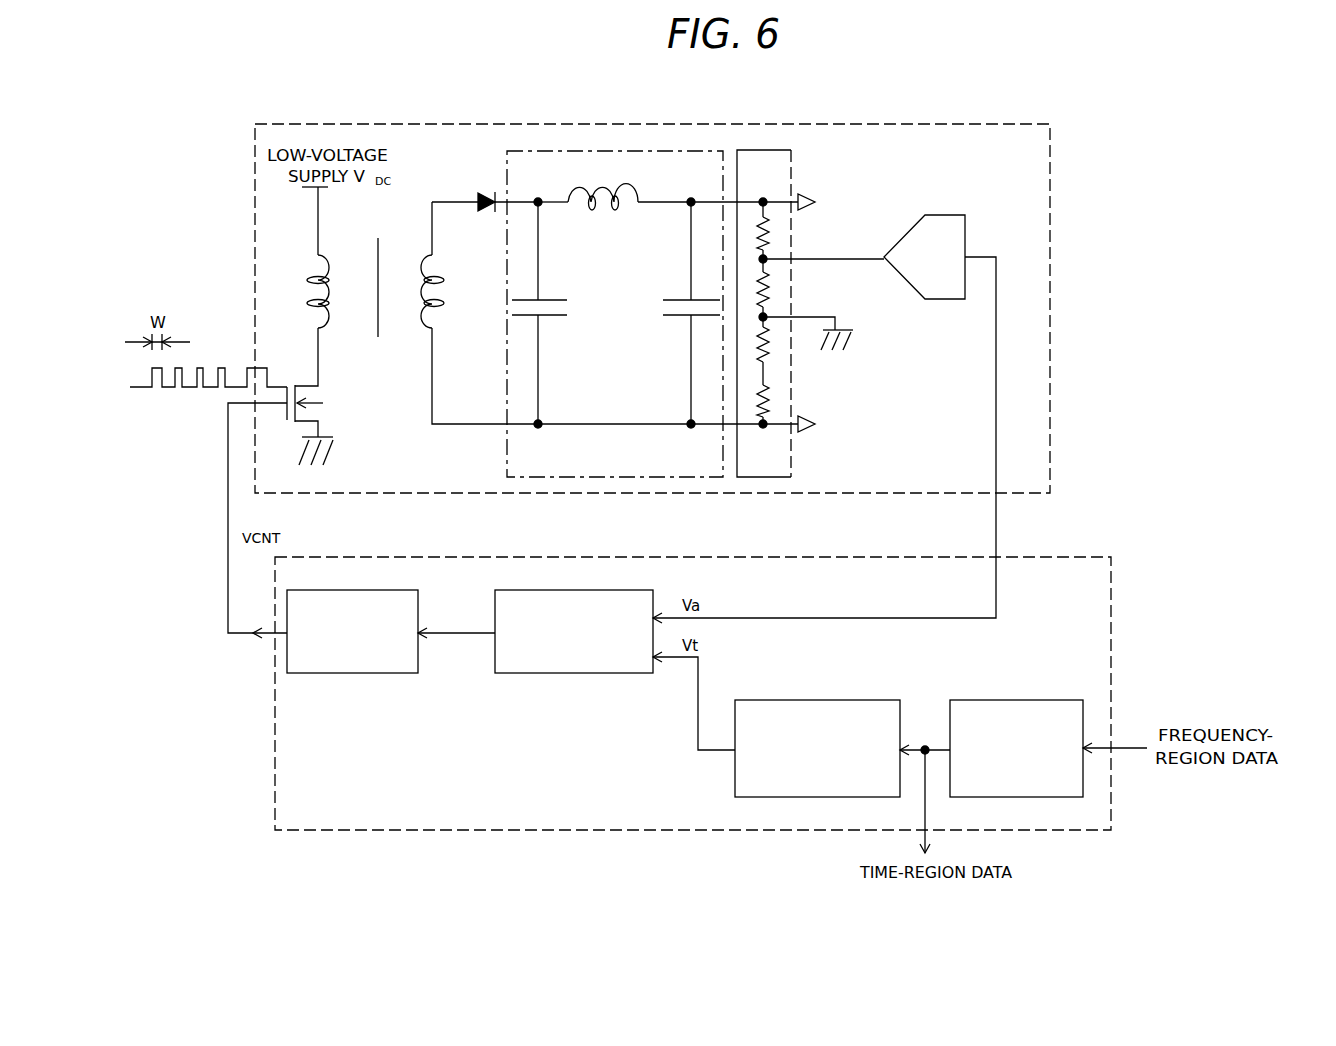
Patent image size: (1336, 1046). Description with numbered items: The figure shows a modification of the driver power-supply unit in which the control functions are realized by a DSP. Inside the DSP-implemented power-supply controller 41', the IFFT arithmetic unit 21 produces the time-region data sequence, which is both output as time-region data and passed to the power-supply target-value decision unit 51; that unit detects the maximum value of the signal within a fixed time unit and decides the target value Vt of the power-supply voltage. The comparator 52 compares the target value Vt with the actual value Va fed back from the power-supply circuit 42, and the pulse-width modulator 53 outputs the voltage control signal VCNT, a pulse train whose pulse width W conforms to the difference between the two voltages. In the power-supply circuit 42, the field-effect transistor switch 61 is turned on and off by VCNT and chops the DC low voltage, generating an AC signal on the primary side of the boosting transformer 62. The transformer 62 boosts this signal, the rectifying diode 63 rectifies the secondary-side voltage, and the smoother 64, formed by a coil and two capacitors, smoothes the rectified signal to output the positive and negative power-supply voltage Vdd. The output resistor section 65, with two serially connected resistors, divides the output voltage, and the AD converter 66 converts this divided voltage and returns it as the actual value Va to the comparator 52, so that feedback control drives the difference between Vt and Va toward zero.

The power-supply circuit 42 is at (1008, 124).
The rectifying diode 63 is at (480, 192).
The boosting transformer 62 is at (312, 291).
The FET switch 61 is at (320, 363).
The smoother 64 is at (507, 462).
The output resistor section 65 is at (791, 458).
The AD converter 66 is at (945, 300).
The pulse-width modulator 53 is at (372, 674).
The comparator 52 is at (546, 674).
The power-supply target-value decision unit 51 is at (783, 699).
The IFFT arithmetic unit 21 is at (1020, 699).
The DSP-implemented power-supply controller 41' is at (693, 721).